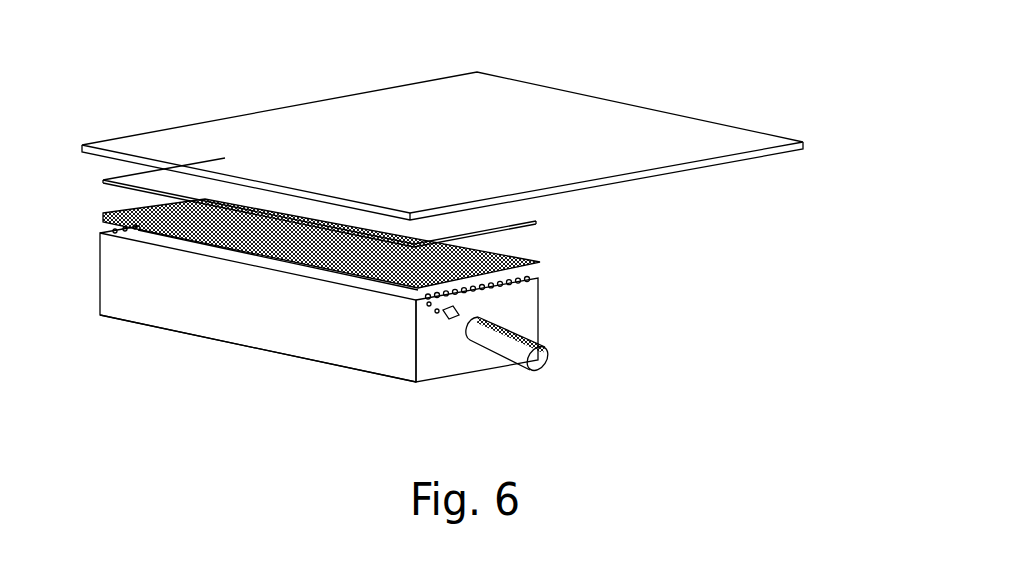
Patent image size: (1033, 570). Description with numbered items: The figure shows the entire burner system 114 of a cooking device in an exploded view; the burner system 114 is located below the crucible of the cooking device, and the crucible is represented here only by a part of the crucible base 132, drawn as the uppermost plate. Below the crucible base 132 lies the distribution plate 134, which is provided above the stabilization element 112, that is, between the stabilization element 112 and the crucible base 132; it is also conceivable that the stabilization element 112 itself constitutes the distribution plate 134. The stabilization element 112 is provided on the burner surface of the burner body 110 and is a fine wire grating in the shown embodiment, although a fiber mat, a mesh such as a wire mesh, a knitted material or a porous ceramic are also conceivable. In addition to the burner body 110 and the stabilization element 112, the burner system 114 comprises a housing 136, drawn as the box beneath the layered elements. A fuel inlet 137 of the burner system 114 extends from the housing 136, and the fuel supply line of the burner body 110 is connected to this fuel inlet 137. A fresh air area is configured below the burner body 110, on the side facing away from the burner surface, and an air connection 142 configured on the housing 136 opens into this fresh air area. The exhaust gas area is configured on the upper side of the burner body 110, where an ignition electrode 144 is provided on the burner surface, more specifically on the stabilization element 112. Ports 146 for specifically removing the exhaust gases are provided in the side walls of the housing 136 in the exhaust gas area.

The crucible base 132 is at (543, 112).
The distribution plate 134 is at (536, 222).
The stabilization element 112 is at (540, 259).
The burner body 110 is at (538, 303).
The housing 136 is at (347, 348).
The fuel inlet 137 is at (538, 325).
The air connection 142 is at (547, 370).
The ignition electrode 144 is at (455, 318).
The ports 146 is at (437, 312).
The burner system 114 is at (613, 372).